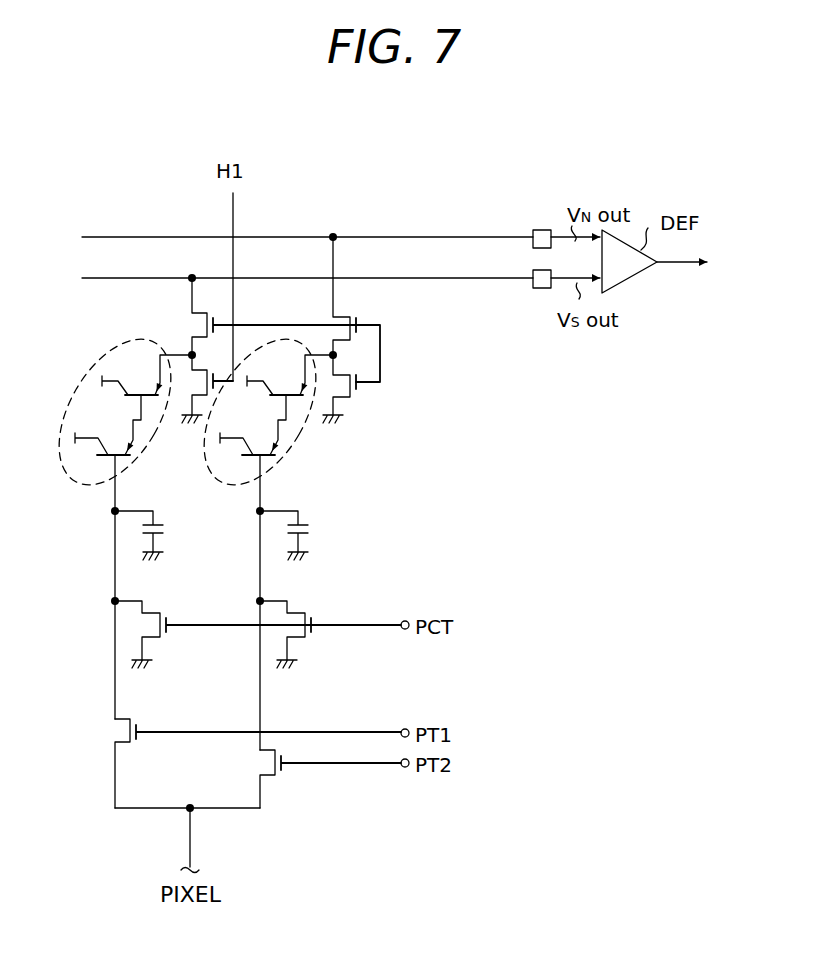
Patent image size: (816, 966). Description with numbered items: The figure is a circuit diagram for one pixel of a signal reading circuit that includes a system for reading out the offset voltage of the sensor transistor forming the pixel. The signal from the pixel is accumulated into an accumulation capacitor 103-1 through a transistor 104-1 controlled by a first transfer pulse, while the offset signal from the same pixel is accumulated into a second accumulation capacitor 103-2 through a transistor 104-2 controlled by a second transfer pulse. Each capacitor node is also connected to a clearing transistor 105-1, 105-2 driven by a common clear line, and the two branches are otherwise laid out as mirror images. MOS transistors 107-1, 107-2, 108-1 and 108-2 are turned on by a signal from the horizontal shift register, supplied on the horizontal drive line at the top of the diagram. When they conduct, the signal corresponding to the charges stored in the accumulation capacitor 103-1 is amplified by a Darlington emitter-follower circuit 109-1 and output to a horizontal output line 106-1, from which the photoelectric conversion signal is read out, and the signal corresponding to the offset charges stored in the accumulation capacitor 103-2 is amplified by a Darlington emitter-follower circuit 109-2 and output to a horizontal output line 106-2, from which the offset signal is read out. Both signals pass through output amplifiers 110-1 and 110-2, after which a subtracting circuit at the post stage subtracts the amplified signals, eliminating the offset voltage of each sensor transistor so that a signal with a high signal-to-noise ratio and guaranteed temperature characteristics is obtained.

The accumulation capacitor 103-1 is at (172, 534).
The accumulation capacitor 103-2 is at (322, 536).
The transistor 104-1 is at (152, 717).
The transistor 104-2 is at (284, 777).
The clear transistor 105-1 is at (173, 615).
The clear transistor 105-2 is at (323, 618).
The horizontal output line 106-1 is at (458, 278).
The horizontal output line 106-2 is at (400, 237).
The MOS transistor 107-1 is at (192, 322).
The MOS transistor 107-2 is at (366, 318).
The MOS transistor 108-1 is at (209, 366).
The MOS transistor 108-2 is at (362, 397).
The Darlington emitter-follower circuit 109-1 is at (108, 355).
The Darlington emitter-follower circuit 109-2 is at (300, 447).
The output amplifier 110-1 is at (542, 288).
The output amplifier 110-2 is at (542, 230).